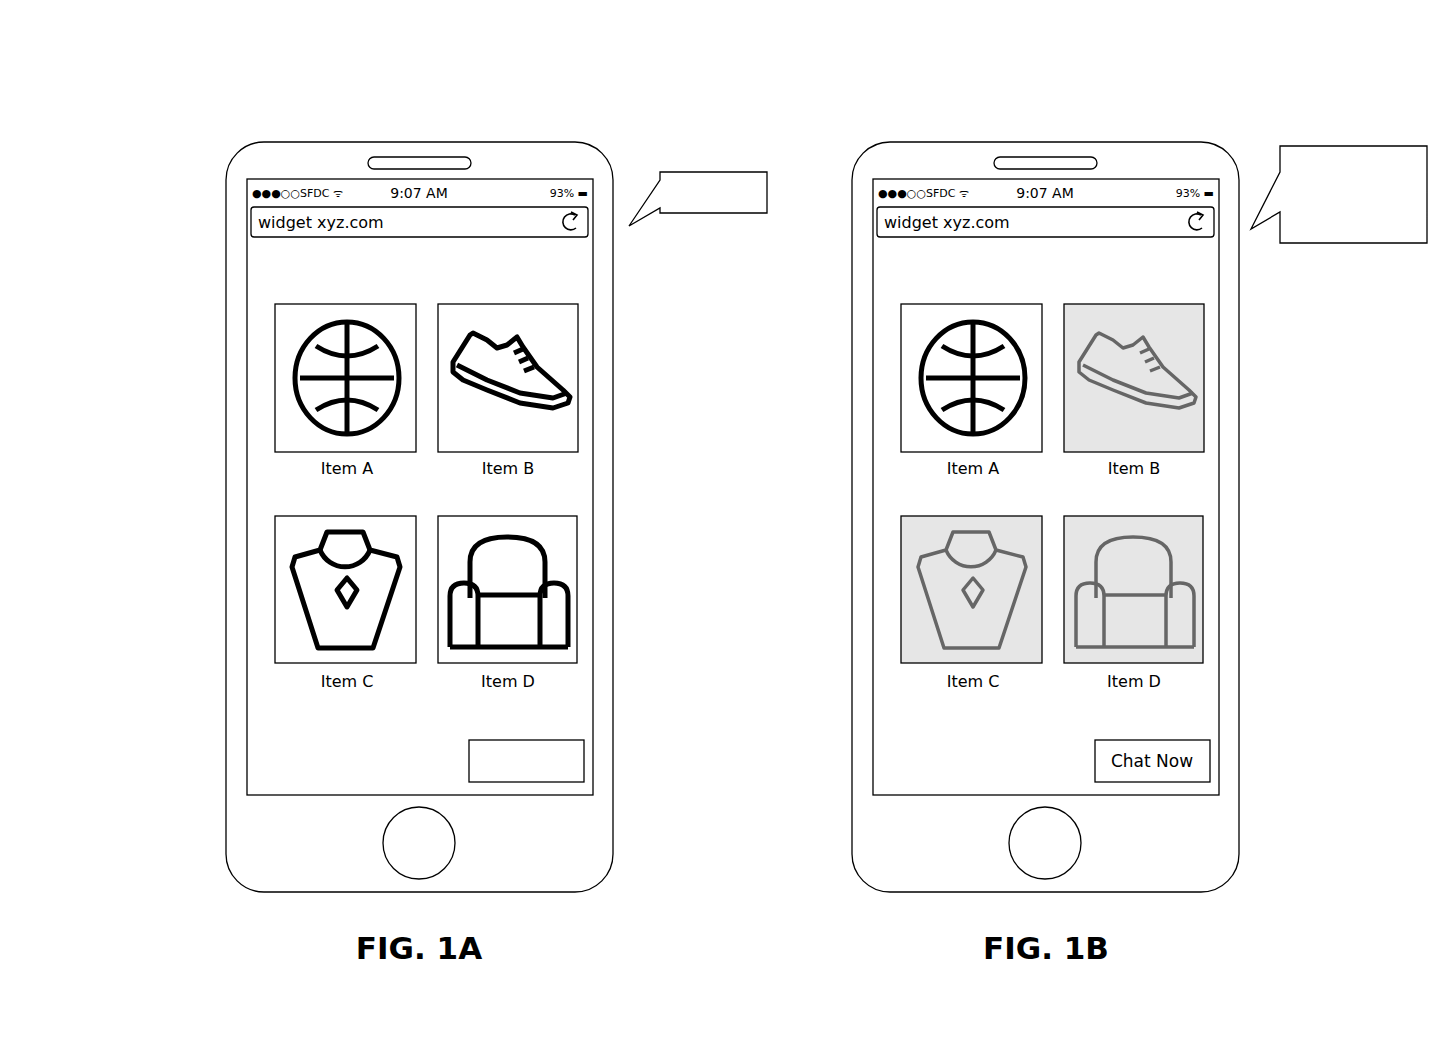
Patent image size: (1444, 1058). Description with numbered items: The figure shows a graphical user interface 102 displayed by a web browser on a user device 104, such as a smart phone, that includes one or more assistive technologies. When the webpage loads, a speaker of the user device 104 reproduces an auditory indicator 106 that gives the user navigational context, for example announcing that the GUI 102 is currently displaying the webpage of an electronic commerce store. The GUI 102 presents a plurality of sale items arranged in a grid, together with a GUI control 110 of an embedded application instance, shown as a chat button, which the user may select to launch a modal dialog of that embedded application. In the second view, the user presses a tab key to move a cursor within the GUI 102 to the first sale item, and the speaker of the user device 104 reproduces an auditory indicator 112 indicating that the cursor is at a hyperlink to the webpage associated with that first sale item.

In FIG. 1A, the graphical user interface 102 is at (559, 268).
In FIG. 1A, the user device 104 is at (260, 118).
In FIG. 1A, the auditory indicator 106 is at (692, 171).
In FIG. 1A, the GUI control 110 is at (584, 765).
In FIG. 1B, the auditory indicator 112 is at (1345, 146).